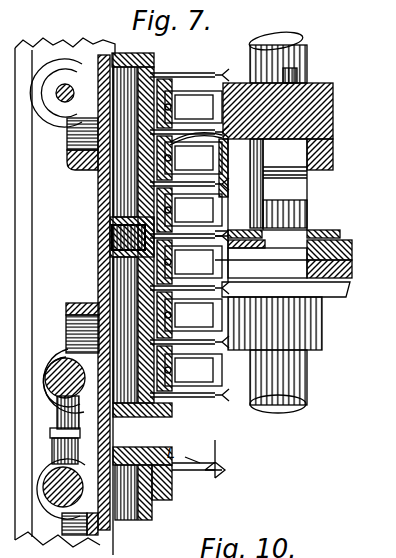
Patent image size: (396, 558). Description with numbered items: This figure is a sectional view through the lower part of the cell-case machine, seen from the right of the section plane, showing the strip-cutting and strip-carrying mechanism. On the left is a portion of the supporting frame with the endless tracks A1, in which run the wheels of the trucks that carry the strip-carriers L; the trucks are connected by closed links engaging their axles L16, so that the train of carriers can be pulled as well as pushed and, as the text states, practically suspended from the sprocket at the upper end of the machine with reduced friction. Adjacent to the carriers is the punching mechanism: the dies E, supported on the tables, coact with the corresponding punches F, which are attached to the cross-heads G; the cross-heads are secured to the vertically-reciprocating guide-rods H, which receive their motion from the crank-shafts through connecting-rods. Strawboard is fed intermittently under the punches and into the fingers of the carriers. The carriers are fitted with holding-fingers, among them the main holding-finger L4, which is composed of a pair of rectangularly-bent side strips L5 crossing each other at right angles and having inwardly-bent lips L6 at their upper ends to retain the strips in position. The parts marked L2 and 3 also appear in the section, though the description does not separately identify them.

The endless tracks A1 is at (27, 199).
The frame part 3 is at (0, 417).
The strip-carriers L is at (176, 73).
The upper bearing bracket L2 is at (80, 107).
The main holding-finger L4 is at (87, 500).
The side strips L5 is at (218, 393).
The inwardly-bent lips L6 is at (215, 449).
The axles L16 is at (62, 366).
The guide-rods H is at (302, 55).
The cross-heads G is at (327, 153).
The punches F is at (297, 186).
The dies E is at (300, 232).